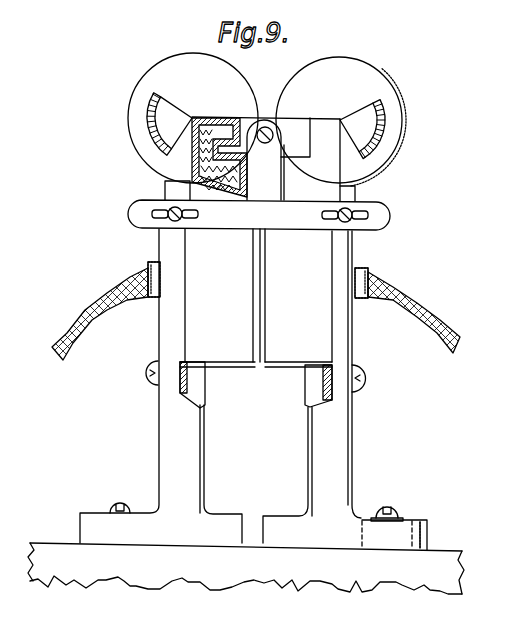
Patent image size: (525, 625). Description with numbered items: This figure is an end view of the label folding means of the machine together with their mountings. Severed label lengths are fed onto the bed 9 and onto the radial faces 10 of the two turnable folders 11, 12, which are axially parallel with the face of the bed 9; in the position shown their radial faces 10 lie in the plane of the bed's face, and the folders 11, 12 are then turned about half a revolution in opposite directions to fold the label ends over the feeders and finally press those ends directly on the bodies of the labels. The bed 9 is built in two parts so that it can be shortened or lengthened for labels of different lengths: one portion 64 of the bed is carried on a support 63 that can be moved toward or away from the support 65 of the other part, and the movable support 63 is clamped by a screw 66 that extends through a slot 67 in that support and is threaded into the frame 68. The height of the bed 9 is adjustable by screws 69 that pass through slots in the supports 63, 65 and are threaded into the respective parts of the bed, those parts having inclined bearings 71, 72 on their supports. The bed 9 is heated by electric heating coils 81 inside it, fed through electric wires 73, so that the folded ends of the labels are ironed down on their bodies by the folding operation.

The bed 9 is at (227, 117).
The radial faces 10 is at (173, 103).
The turnable folder 11 is at (169, 124).
The turnable folder 12 is at (362, 129).
The bed portion 64 is at (310, 159).
The electric heating coils 81 is at (192, 159).
The electric wires 73 is at (64, 349).
The screws 69 is at (148, 375).
The inclined bearing 72 is at (190, 402).
The inclined bearing 71 is at (316, 405).
The support 65 is at (200, 430).
The support 63 is at (298, 475).
The screw 66 is at (392, 510).
The slot 67 is at (397, 532).
The frame 68 is at (338, 556).